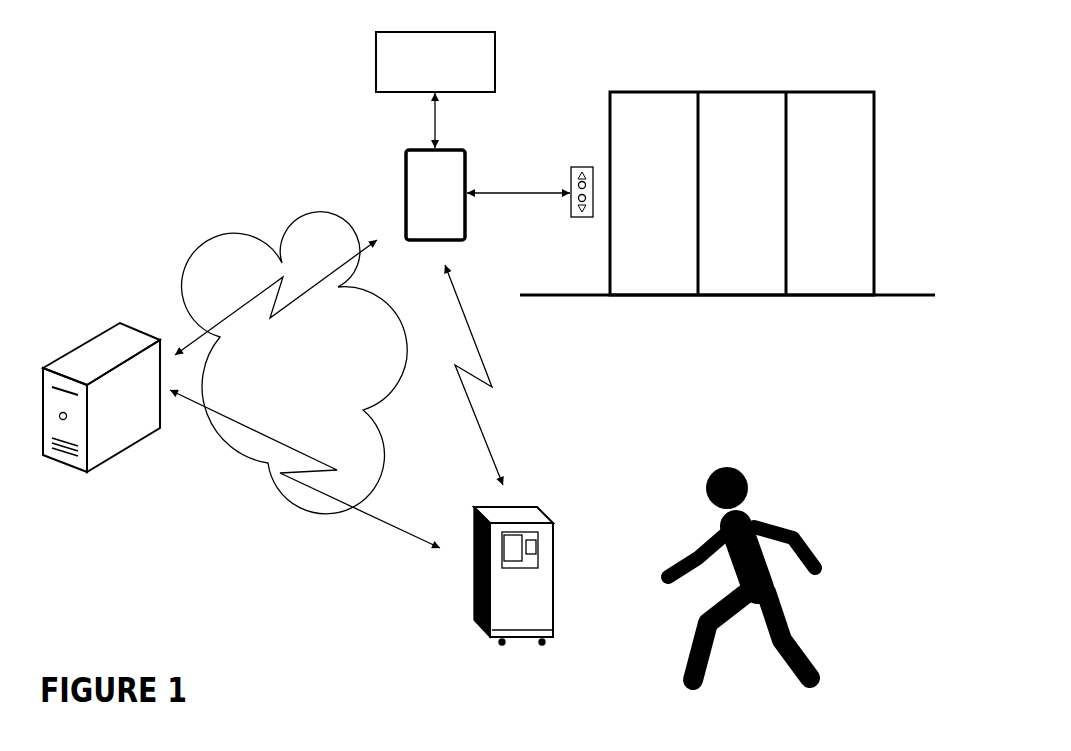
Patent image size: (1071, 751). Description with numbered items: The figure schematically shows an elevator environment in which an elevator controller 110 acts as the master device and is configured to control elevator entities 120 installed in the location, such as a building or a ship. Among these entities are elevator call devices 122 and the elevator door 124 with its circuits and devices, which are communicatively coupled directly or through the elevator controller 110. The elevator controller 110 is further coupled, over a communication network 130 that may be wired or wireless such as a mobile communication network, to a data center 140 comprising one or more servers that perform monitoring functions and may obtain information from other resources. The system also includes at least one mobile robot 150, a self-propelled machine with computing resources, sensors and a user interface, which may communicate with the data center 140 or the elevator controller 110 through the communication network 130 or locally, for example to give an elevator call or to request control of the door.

The elevator controller 110 is at (405, 171).
The elevator entities 120 is at (376, 62).
The elevator call devices 122 is at (573, 167).
The elevator door 124 is at (875, 197).
The communication network 130 is at (240, 235).
The data center 140 is at (100, 334).
The mobile robot 150 is at (473, 599).